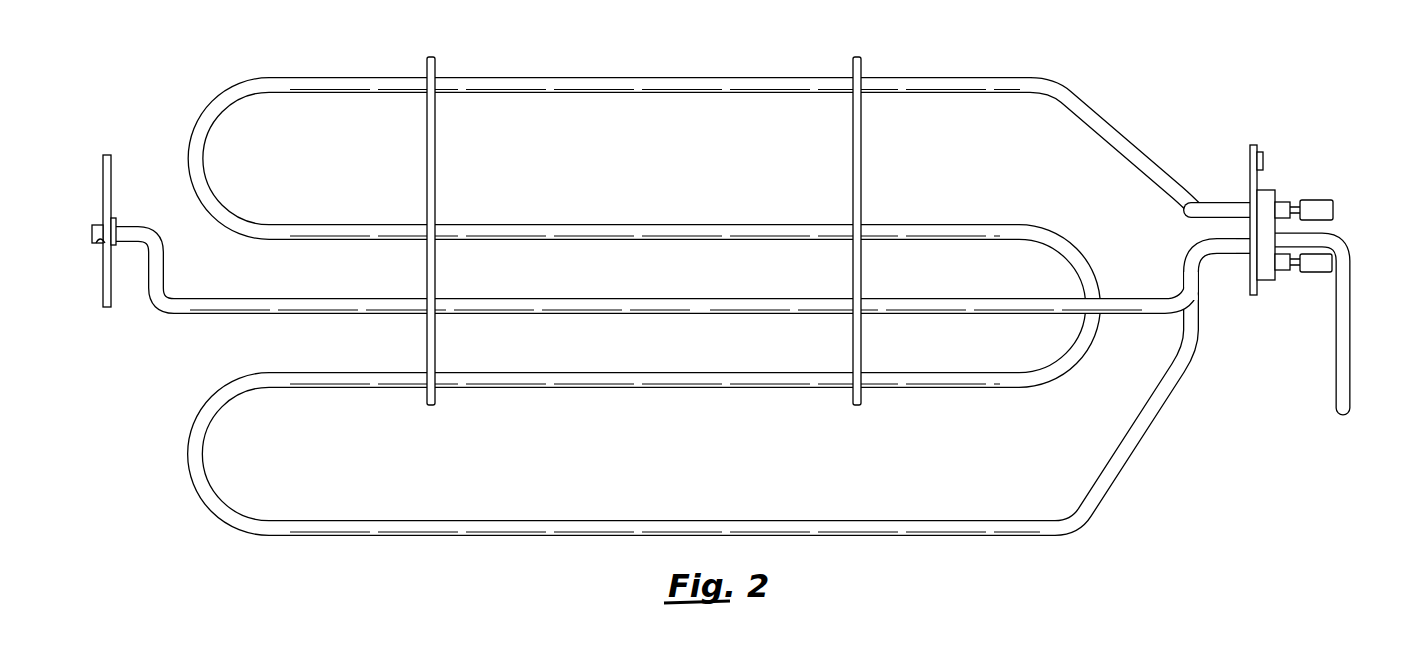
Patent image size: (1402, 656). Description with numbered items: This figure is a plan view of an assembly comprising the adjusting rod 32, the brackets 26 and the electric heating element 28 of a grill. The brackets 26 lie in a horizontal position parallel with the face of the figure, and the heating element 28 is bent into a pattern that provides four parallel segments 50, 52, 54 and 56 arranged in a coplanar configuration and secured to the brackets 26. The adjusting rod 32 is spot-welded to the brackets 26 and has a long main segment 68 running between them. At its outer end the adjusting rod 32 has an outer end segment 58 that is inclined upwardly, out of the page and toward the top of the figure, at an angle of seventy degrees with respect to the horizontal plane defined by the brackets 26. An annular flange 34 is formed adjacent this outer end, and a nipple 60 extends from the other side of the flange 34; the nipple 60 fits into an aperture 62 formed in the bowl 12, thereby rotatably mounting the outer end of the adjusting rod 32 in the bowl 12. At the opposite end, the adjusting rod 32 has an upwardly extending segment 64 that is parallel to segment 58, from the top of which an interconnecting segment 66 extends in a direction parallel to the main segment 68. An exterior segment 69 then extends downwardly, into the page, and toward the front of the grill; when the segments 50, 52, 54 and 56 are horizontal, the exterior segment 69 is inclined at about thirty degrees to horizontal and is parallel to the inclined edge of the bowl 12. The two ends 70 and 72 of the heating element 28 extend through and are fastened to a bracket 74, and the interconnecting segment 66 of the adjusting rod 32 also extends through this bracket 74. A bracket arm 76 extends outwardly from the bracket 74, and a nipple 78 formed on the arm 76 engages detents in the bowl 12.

The bowl 12 is at (103, 290).
The brackets 26 is at (437, 58).
The heating element 28 is at (724, 280).
The adjusting rod 32 is at (641, 300).
The annular flange 34 is at (117, 223).
The heating element segment 50 is at (530, 80).
The heating element segment 52 is at (532, 240).
The heating element segment 54 is at (582, 374).
The heating element segment 56 is at (553, 520).
The outer end segment 58 is at (160, 273).
The nipple 60 is at (93, 224).
The aperture 62 is at (104, 238).
The upwardly extending segment 64 is at (1195, 253).
The interconnecting segment 66 is at (1286, 233).
The main segment 68 is at (750, 300).
The exterior segment 69 is at (1352, 310).
The heating element end 70 is at (1238, 266).
The heating element end 72 is at (1225, 198).
The bracket 74 is at (1268, 278).
The bracket arm 76 is at (1248, 165).
The nipple 78 is at (1264, 155).